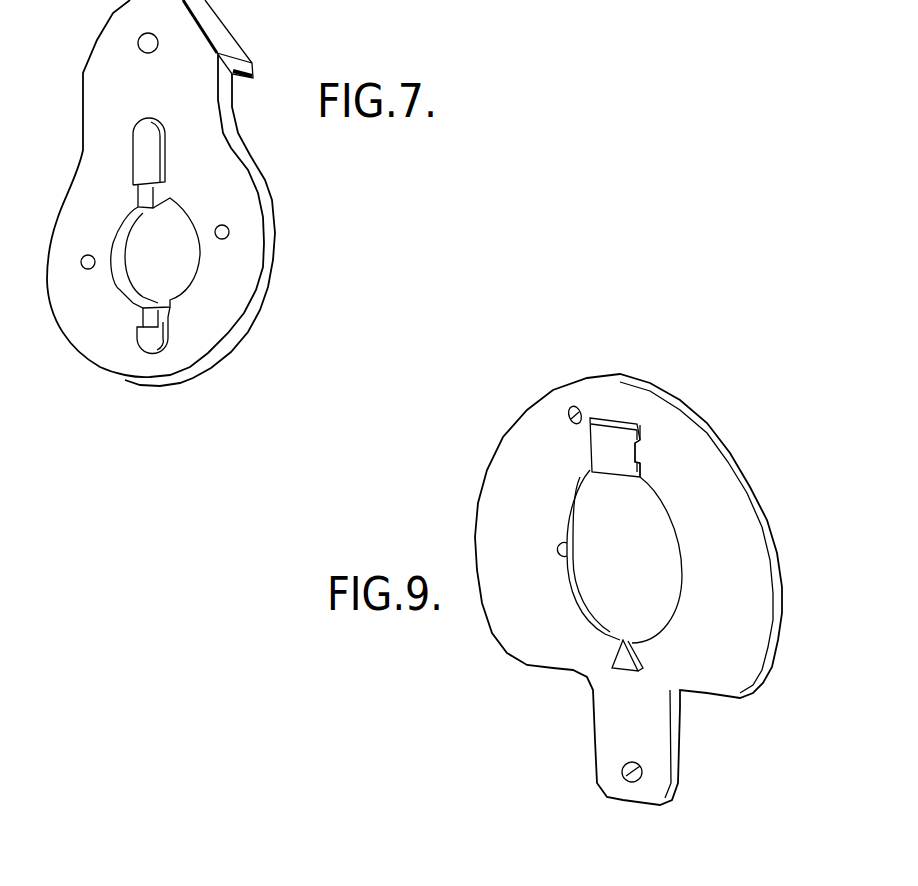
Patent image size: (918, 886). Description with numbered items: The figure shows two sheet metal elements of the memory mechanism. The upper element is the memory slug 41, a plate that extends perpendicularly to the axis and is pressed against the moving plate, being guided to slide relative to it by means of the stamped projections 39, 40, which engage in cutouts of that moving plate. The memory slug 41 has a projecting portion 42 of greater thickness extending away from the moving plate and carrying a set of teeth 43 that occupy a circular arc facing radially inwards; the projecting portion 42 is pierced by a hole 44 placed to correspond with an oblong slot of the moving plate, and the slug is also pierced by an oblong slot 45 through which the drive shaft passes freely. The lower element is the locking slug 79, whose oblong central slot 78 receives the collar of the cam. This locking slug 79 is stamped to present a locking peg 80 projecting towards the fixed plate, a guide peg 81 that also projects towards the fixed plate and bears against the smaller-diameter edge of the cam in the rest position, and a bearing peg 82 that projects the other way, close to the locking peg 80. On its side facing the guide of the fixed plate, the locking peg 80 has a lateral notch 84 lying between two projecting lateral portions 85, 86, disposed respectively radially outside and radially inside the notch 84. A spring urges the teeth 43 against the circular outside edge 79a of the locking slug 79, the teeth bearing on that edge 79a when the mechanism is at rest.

In FIG. 7, the stamped projection 39 is at (153, 334).
In FIG. 7, the stamped projection 40 is at (143, 153).
In FIG. 7, the memory slug 41 is at (248, 51).
In FIG. 7, the projecting portion 42 is at (222, 32).
In FIG. 7, the set of teeth 43 is at (247, 83).
In FIG. 7, the hole 44 is at (141, 39).
In FIG. 7, the oblong slot 45 is at (122, 244).
In FIG. 9, the oblong central slot 78 is at (676, 545).
In FIG. 9, the locking slug 79 is at (662, 390).
In FIG. 9, the circular outside edge 79a is at (629, 378).
In FIG. 9, the locking peg 80 is at (605, 428).
In FIG. 9, the guide peg 81 is at (616, 661).
In FIG. 9, the bearing peg 82 is at (570, 411).
In FIG. 9, the lateral notch 84 is at (641, 451).
In FIG. 9, the projecting lateral portion 85 is at (645, 432).
In FIG. 9, the projecting lateral portion 86 is at (643, 472).